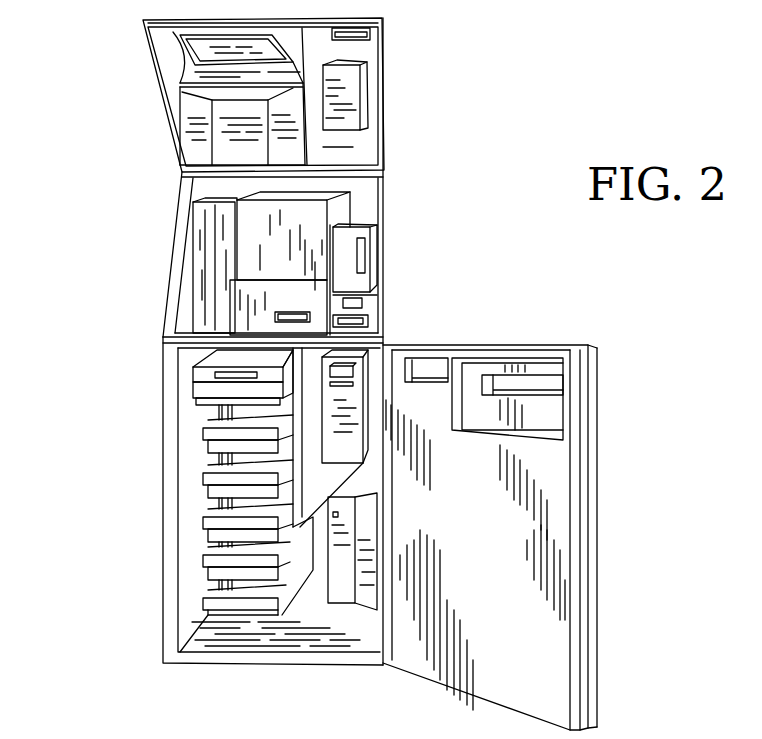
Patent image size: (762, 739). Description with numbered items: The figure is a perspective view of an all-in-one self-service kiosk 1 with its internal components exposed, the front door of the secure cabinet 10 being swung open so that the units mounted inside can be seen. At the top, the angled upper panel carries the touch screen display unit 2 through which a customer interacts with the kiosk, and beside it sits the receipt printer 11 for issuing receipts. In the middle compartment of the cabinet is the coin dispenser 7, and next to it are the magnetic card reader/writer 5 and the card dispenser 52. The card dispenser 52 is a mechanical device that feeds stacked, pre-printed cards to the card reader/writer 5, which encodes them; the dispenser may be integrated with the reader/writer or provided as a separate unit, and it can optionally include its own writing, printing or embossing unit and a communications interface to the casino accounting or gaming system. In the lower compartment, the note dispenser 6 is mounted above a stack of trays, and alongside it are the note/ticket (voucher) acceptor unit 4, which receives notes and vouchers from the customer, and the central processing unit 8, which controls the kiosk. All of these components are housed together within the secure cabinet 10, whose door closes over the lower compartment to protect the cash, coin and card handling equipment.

The all-in-one self-service kiosk 1 is at (118, 92).
The touch screen display unit 2 is at (223, 140).
The receipt printer 11 is at (357, 91).
The coin dispenser 7 is at (250, 253).
The card dispenser 52 is at (365, 250).
The magnetic card reader/writer 5 is at (365, 308).
The note dispenser 6 is at (203, 373).
The note/ticket (voucher) acceptor unit 4 is at (338, 387).
The central processing unit 8 is at (347, 538).
The secure cabinet 10 is at (553, 480).